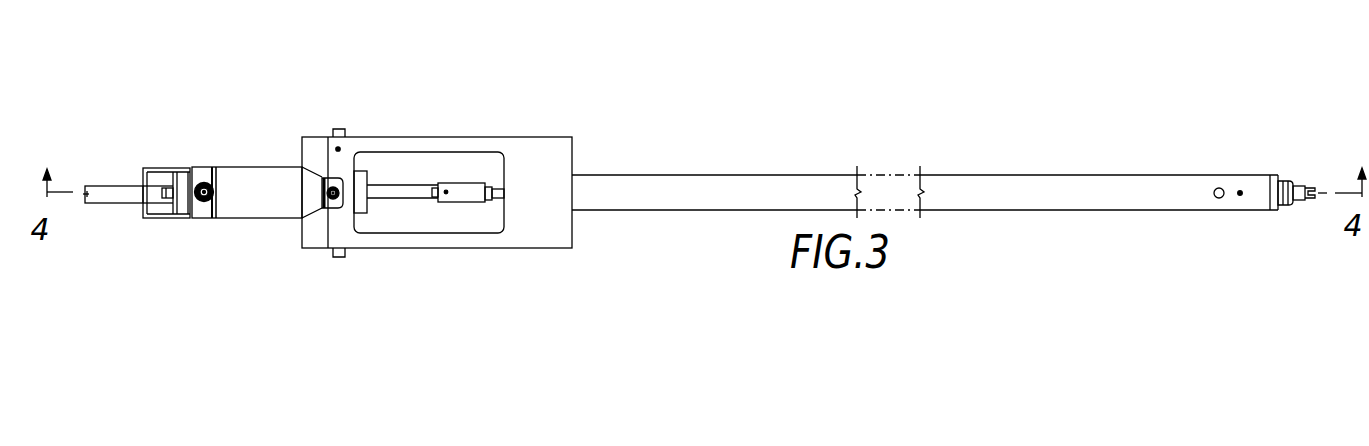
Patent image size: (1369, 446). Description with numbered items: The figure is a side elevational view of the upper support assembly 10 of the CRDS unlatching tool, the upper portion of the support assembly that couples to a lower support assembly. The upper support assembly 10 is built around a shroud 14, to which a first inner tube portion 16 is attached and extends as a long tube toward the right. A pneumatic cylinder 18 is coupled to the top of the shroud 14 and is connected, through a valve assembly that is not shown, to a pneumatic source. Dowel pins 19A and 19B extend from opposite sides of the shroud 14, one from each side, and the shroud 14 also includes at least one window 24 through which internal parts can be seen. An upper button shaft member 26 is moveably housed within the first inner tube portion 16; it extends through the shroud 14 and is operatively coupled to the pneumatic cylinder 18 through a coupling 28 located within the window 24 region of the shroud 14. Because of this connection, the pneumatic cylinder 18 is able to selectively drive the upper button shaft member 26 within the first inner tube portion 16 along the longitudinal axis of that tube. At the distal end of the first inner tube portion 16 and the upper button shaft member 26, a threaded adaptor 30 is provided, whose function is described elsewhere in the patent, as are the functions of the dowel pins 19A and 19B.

The upper support assembly 10 is at (820, 110).
The shroud 14 is at (413, 136).
The first inner tube portion 16 is at (733, 175).
The pneumatic cylinder 18 is at (240, 166).
The dowel pin 19A is at (333, 252).
The dowel pin 19B is at (338, 127).
The window 24 is at (415, 217).
The upper button shaft member 26 is at (1310, 186).
The coupling 28 is at (467, 185).
The threaded adaptor 30 is at (1287, 181).